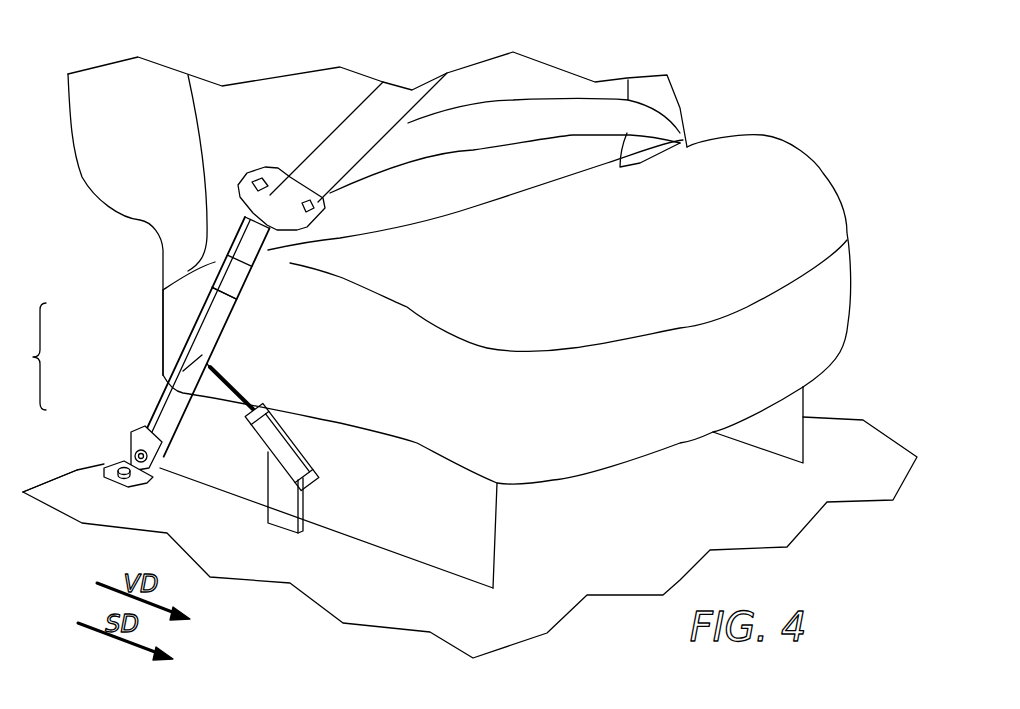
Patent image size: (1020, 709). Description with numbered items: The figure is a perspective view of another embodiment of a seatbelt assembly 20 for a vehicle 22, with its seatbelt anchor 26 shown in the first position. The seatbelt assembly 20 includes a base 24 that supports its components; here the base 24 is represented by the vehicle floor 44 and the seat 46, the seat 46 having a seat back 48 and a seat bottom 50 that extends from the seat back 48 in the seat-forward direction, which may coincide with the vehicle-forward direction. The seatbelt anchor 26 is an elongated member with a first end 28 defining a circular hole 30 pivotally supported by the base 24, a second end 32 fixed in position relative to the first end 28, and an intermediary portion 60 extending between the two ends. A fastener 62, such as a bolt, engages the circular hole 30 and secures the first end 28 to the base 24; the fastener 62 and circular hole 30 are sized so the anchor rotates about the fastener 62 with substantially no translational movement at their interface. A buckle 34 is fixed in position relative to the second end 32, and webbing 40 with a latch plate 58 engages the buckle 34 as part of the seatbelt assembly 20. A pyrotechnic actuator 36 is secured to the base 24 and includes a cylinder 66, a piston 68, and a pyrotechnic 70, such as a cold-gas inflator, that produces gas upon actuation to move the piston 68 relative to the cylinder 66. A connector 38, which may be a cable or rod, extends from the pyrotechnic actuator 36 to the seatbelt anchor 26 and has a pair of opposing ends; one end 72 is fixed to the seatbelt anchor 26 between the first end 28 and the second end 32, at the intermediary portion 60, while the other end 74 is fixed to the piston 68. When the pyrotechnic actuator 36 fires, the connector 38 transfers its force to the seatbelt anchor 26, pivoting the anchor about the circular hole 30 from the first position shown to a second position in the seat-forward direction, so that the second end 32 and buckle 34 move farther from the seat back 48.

The seatbelt assembly 20 is at (168, 171).
The vehicle 22 is at (843, 440).
The base 24 is at (24, 356).
The seatbelt anchor 26 is at (235, 313).
The first end 28 is at (155, 467).
The circular hole 30 is at (143, 444).
The second end 32 is at (210, 290).
The buckle 34 is at (262, 255).
The pyrotechnic actuator 36 is at (295, 452).
The connector 38 is at (222, 395).
The webbing 40 is at (403, 155).
The floor 44 is at (82, 490).
The seat 46 is at (180, 313).
The seat back 48 is at (258, 103).
The seat bottom 50 is at (788, 160).
The latch plate 58 is at (257, 173).
The intermediary portion 60 is at (185, 367).
The fastener 62 is at (132, 443).
The cylinder 66 is at (267, 442).
The piston 68 is at (305, 463).
The pyrotechnic 70 is at (265, 417).
The end of the connector 72 is at (213, 380).
The end of the connector 74 is at (248, 417).